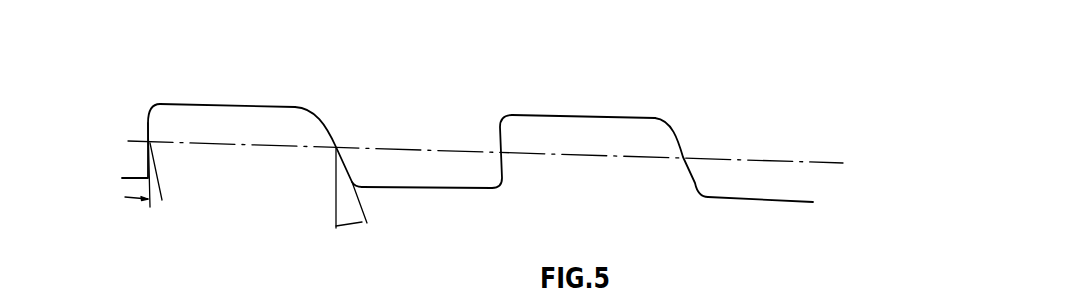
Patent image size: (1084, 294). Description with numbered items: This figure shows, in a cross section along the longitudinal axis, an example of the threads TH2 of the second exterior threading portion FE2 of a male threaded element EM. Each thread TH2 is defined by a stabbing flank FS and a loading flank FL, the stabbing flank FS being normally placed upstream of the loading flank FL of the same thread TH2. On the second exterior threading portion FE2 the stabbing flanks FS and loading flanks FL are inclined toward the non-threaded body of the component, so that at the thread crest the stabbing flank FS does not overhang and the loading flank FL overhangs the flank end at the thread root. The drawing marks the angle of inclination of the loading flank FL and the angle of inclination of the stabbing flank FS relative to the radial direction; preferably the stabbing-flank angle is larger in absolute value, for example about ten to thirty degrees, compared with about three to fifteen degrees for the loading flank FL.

The loading flank FL is at (138, 122).
The thread of the second threading portion TH2 is at (240, 93).
The stabbing flank FS is at (516, 127).
The second exterior threading portion FE2 is at (650, 98).
The male threaded element EM is at (797, 197).